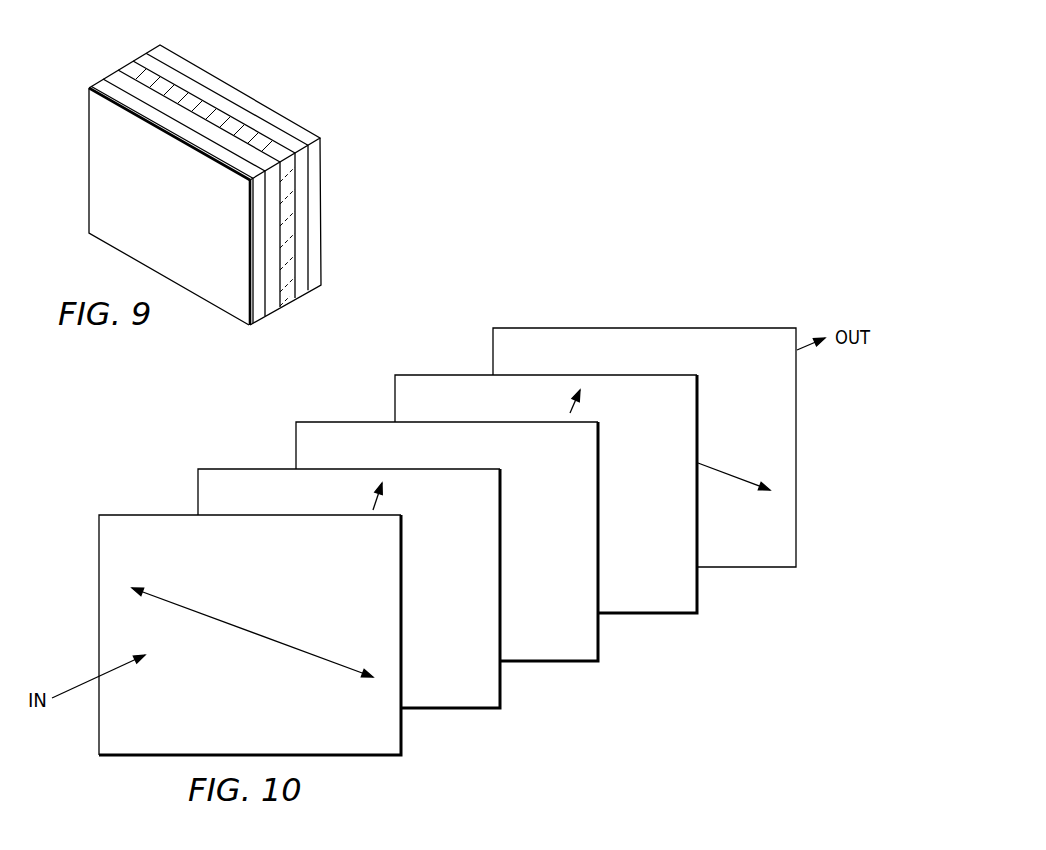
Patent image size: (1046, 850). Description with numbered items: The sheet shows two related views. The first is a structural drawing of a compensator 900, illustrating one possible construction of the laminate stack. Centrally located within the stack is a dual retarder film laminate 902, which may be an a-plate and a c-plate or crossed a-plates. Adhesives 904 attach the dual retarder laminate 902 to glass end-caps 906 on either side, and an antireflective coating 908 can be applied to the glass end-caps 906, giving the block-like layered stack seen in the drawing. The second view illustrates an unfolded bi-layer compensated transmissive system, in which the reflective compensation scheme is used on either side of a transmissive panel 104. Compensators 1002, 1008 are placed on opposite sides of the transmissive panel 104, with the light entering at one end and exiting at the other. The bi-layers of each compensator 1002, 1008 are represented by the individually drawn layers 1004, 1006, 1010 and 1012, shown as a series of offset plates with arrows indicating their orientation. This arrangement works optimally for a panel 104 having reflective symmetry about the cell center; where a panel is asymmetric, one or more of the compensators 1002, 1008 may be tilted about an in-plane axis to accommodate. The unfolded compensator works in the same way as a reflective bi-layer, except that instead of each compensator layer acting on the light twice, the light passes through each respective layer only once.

In FIG. 9, the compensator 900 is at (202, 169).
In FIG. 9, the dual retarder film laminate 902 is at (287, 192).
In FIG. 9, the adhesives 904 is at (118, 75).
In FIG. 9, the glass end-caps 906 is at (158, 52).
In FIG. 9, the antireflective coating 908 is at (93, 162).
In FIG. 10, the compensator 1002 is at (269, 645).
In FIG. 10, the layer 1004 is at (98, 633).
In FIG. 10, the layer 1006 is at (197, 492).
In FIG. 10, the transmissive panel 104 is at (295, 442).
In FIG. 10, the compensator 1008 is at (596, 507).
In FIG. 10, the layer 1010 is at (393, 397).
In FIG. 10, the layer 1012 is at (798, 447).